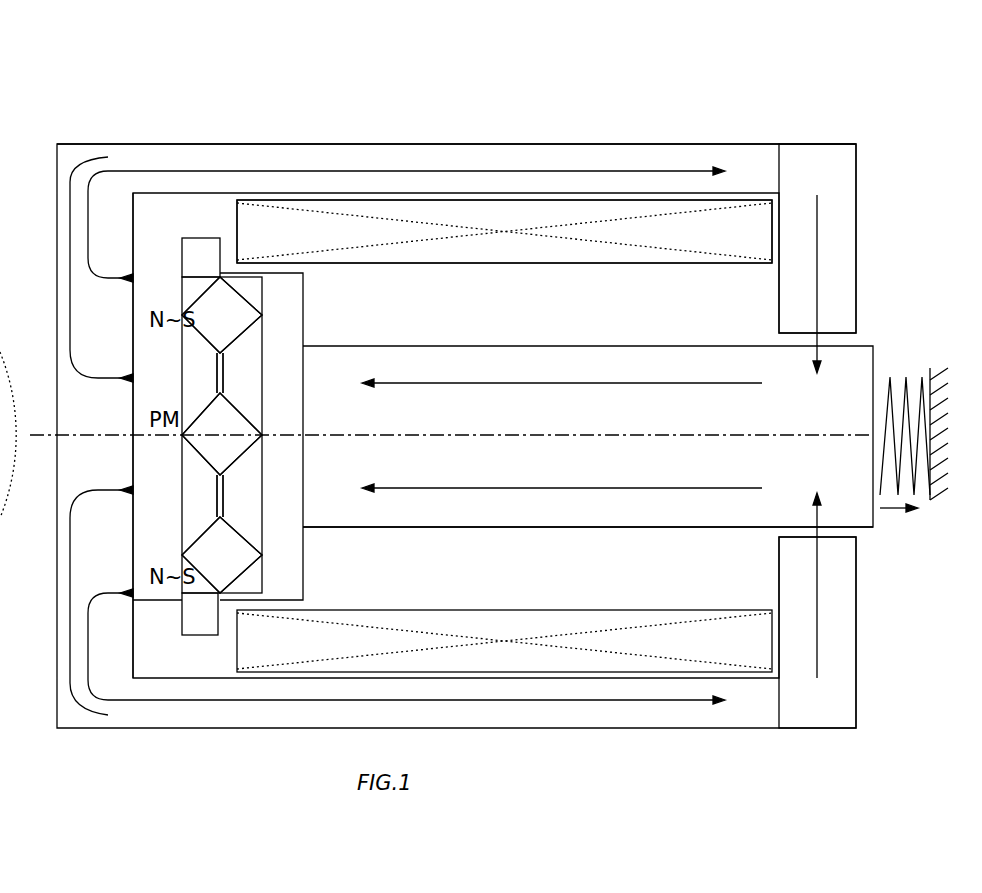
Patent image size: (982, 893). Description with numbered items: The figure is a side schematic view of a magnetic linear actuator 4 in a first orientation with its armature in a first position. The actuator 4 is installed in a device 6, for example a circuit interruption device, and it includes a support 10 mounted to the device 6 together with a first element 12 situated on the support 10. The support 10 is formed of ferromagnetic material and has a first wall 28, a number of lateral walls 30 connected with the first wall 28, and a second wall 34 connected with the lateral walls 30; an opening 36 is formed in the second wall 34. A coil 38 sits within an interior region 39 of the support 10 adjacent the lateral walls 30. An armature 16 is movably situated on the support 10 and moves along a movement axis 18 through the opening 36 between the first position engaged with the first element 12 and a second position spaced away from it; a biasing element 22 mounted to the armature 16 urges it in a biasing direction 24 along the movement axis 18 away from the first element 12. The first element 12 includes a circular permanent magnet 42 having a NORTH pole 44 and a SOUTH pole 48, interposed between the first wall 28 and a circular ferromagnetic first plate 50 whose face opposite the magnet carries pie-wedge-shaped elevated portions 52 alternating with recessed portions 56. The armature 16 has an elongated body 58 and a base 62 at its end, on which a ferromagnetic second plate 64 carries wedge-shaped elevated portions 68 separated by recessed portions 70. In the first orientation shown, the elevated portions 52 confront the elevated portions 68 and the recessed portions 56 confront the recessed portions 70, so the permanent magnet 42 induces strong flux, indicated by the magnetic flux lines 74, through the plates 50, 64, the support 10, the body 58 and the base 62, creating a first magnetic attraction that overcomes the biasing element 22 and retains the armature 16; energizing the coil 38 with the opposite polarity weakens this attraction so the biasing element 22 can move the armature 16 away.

The actuator 4 is at (838, 110).
The device 6 is at (710, 82).
The support 10 is at (384, 122).
The first element 12 is at (158, 258).
The armature 16 is at (640, 320).
The movement axis 18 is at (612, 435).
The biasing element 22 is at (908, 377).
The biasing direction 24 is at (895, 512).
The first wall 28 is at (55, 520).
The lateral walls 30 is at (455, 143).
The second wall 34 is at (856, 182).
The opening 36 is at (855, 350).
The coil 38 is at (415, 263).
The interior region 39 is at (515, 322).
The permanent magnet 42 is at (157, 603).
The NORTH pole 44 is at (133, 292).
The SOUTH pole 48 is at (195, 272).
The first plate 50 is at (200, 635).
The elevated portions 52 is at (222, 392).
The recessed portions 56 is at (198, 332).
The body 58 is at (565, 527).
The base 62 is at (305, 560).
The second plate 64 is at (240, 610).
The elevated portions 68 is at (232, 355).
The recessed portions 70 is at (248, 300).
The magnetic flux lines 74 is at (545, 171).